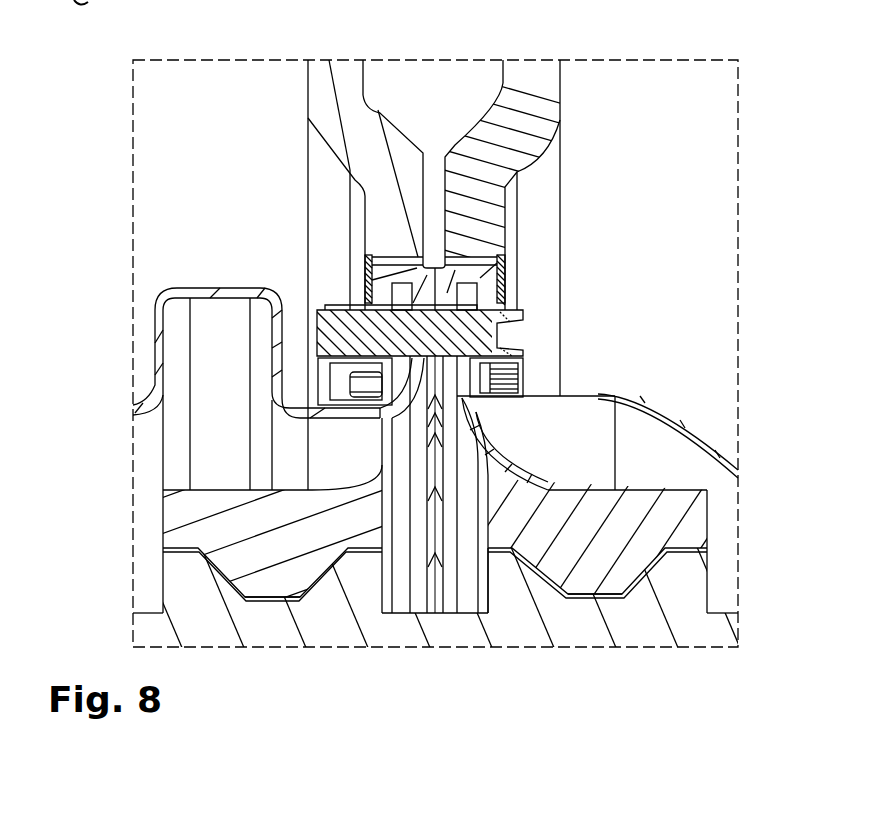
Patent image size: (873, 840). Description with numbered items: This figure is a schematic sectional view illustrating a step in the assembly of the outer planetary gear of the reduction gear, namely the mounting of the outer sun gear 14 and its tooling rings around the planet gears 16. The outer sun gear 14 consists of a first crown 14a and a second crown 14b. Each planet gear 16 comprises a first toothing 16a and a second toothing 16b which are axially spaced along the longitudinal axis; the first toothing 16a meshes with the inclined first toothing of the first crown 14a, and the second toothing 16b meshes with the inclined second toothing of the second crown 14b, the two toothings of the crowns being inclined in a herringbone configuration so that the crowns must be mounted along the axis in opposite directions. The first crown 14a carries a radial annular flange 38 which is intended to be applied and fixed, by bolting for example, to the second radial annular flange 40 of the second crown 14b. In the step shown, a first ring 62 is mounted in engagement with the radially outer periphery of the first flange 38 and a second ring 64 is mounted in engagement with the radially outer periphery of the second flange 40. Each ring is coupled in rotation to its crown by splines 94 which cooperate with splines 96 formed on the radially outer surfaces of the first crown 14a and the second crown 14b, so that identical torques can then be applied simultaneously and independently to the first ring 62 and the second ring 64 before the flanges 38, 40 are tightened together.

The outer sun gear 14 is at (712, 512).
The first crown 14a is at (247, 560).
The second crown 14b is at (650, 595).
The planet gears 16 is at (706, 642).
The first toothing 16a is at (267, 600).
The second toothing 16b is at (588, 612).
The radial annular flange 38 is at (500, 292).
The second radial annular flange 40 is at (365, 294).
The first ring 62 is at (553, 83).
The second ring 64 is at (318, 98).
The splines 94 is at (365, 268).
The splines 96 is at (394, 258).